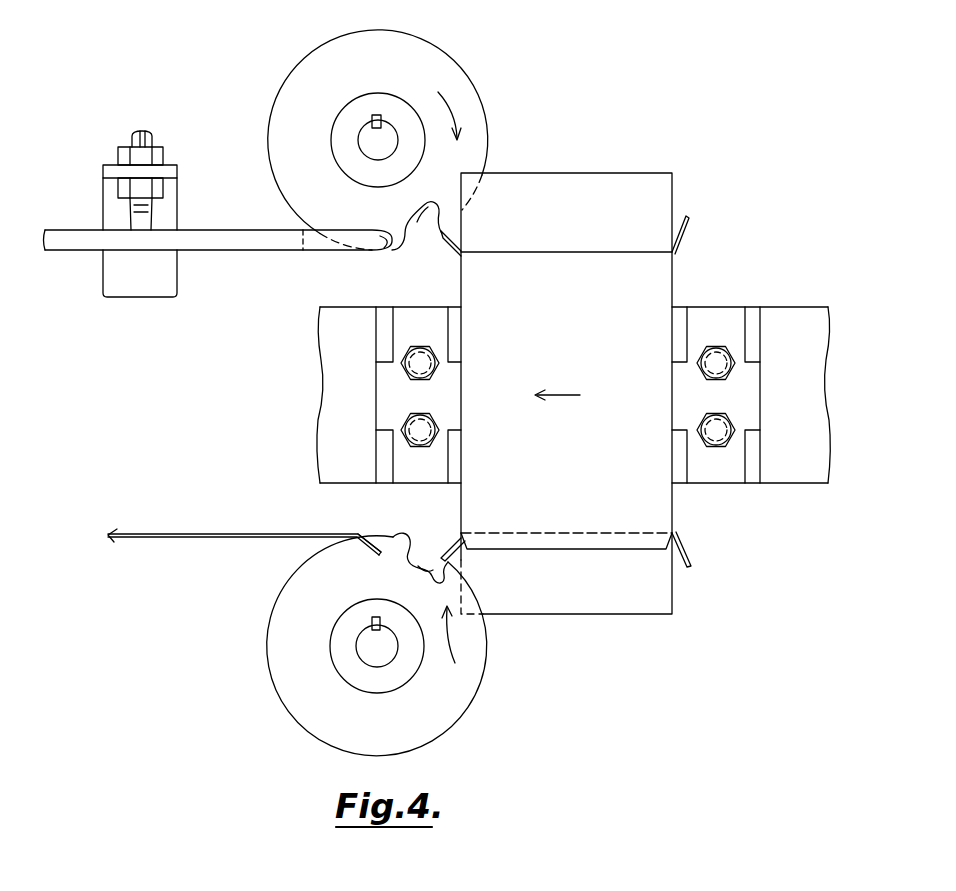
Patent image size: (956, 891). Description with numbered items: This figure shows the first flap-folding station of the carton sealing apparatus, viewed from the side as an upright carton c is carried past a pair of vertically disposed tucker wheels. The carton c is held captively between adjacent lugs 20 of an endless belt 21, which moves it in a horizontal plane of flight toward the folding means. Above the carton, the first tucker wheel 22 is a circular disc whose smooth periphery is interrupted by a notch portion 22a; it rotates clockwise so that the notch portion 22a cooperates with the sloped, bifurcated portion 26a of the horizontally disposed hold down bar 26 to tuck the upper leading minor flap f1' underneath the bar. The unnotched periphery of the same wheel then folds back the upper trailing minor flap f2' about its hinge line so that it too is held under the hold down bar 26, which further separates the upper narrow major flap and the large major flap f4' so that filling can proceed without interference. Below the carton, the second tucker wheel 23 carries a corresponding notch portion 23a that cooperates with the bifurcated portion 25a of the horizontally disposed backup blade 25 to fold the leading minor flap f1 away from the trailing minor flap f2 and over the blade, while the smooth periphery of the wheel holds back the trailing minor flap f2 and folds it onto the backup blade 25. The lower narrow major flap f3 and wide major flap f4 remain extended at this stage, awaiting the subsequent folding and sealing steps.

The lugs 20 is at (385, 477).
The endless belt 21 is at (330, 410).
The first tucker wheel 22 is at (443, 52).
The notch portion 22a is at (420, 214).
The second tucker wheel 23 is at (405, 740).
The notch portion 23a is at (418, 582).
The backup blade 25 is at (186, 538).
The bifurcated portion 25a is at (364, 554).
The hold down bar 26 is at (255, 250).
The bifurcated portion 26a is at (384, 250).
The carton c is at (590, 342).
The leading minor flap f1 is at (435, 536).
The upper leading minor flap f1' is at (432, 263).
The trailing minor flap f2 is at (707, 565).
The upper trailing minor flap f2' is at (704, 237).
The narrow major flap f3 is at (512, 541).
The wide major flap f4 is at (589, 636).
The upper wide major flap f4' is at (614, 166).